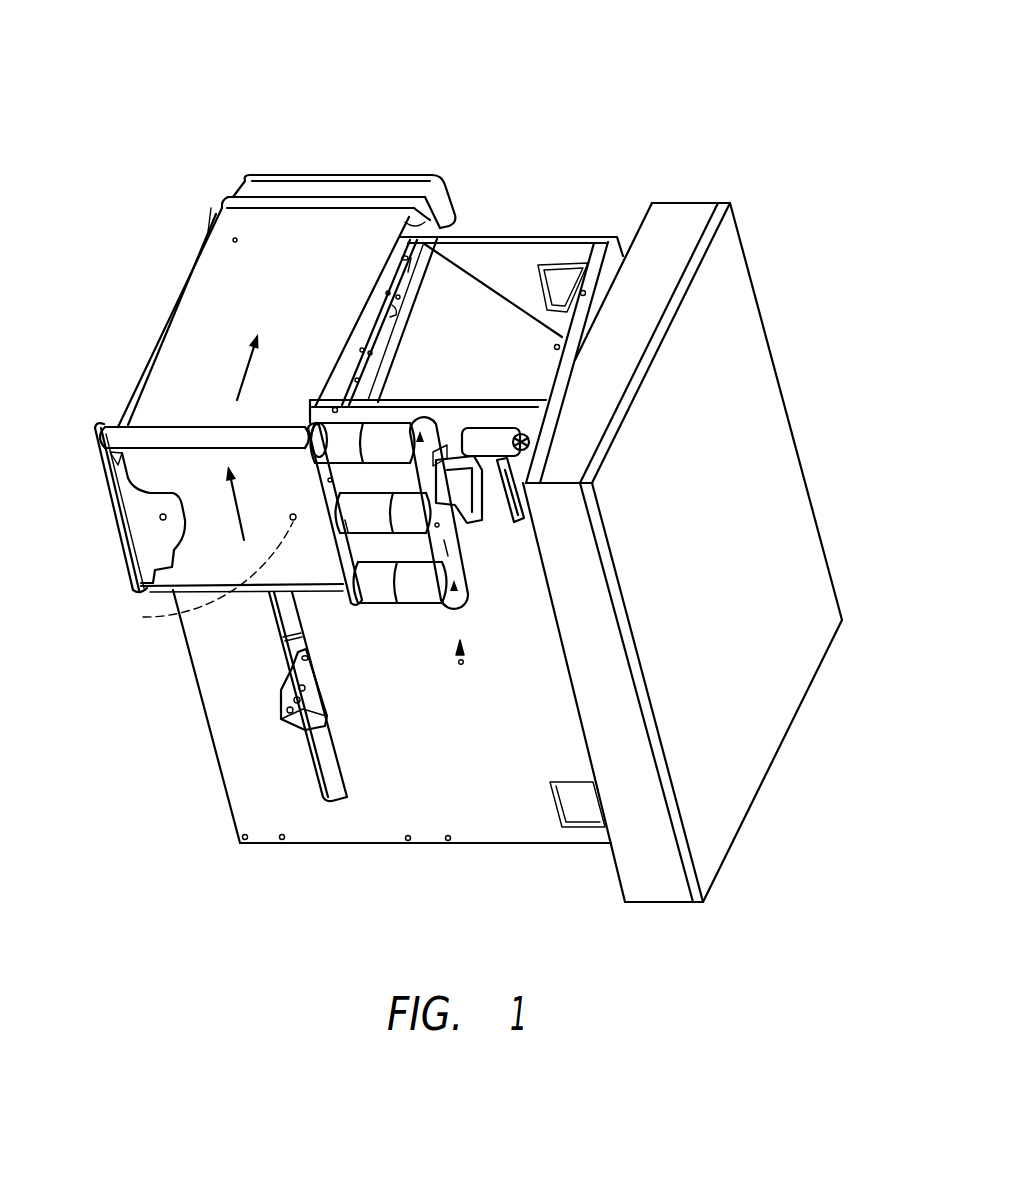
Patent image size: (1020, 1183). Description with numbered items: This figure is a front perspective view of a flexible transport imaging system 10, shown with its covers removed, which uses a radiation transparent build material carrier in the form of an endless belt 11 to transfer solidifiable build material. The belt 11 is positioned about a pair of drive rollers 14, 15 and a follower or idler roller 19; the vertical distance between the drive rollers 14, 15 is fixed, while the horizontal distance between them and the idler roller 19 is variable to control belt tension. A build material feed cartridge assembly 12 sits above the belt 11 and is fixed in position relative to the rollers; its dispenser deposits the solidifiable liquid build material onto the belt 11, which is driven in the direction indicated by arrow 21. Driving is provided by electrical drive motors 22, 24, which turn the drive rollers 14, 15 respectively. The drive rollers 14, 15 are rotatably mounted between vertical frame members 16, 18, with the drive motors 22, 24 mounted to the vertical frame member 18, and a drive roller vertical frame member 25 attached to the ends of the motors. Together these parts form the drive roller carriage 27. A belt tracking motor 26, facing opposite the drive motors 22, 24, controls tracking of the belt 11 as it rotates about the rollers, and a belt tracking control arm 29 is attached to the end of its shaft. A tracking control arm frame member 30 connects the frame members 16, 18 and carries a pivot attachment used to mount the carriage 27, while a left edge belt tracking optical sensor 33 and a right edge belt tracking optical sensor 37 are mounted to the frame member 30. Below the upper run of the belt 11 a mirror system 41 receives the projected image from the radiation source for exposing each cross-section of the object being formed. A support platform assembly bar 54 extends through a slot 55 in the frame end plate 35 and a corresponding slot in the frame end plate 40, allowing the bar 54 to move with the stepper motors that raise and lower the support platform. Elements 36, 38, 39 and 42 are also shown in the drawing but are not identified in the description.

The flexible transport imaging system 10 is at (712, 133).
The endless belt 11 is at (289, 323).
The build material feed cartridge assembly 12 is at (340, 173).
The drive roller 14 is at (113, 428).
The drive roller 15 is at (137, 578).
The vertical frame member 16 is at (120, 536).
The vertical frame member 18 is at (346, 620).
The idler roller 19 is at (415, 222).
The arrow 21 is at (240, 512).
The electrical drive motor 22 is at (390, 450).
The electrical drive motor 24 is at (406, 612).
The drive roller vertical frame member 25 is at (464, 584).
The belt tracking motor 26 is at (398, 541).
The drive roller carriage 27 is at (458, 632).
The belt tracking control arm 29 is at (470, 556).
The tracking control arm frame member 30 is at (123, 487).
The left edge belt tracking optical sensor 33 is at (159, 517).
The frame end plate 35 is at (448, 753).
The fastener 36 is at (457, 447).
The right edge belt tracking optical sensor 37 is at (203, 572).
The latch 38 is at (461, 475).
The clamp 39 is at (517, 435).
The frame end plate 40 is at (526, 270).
The mirror system 41 is at (471, 347).
The printer housing panel 42 is at (838, 592).
The support platform assembly bar 54 is at (280, 716).
The slot 55 is at (330, 773).